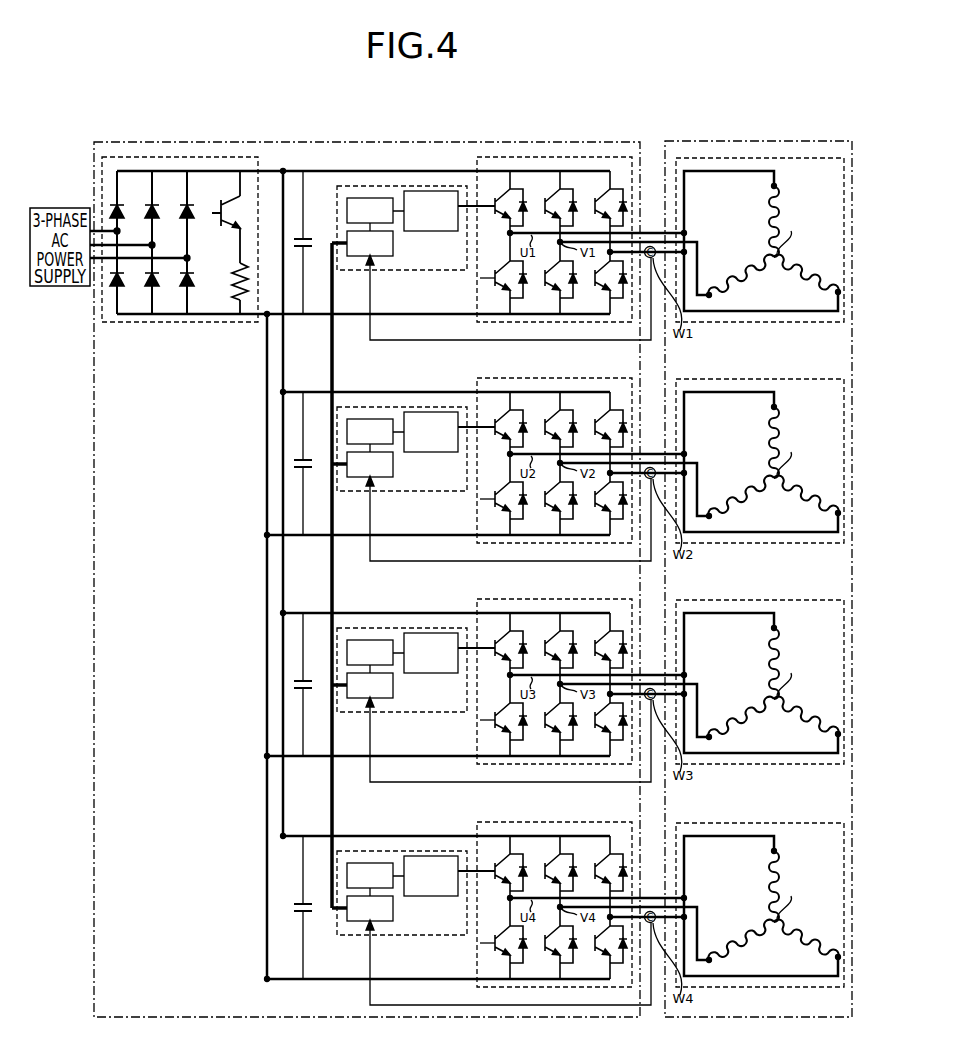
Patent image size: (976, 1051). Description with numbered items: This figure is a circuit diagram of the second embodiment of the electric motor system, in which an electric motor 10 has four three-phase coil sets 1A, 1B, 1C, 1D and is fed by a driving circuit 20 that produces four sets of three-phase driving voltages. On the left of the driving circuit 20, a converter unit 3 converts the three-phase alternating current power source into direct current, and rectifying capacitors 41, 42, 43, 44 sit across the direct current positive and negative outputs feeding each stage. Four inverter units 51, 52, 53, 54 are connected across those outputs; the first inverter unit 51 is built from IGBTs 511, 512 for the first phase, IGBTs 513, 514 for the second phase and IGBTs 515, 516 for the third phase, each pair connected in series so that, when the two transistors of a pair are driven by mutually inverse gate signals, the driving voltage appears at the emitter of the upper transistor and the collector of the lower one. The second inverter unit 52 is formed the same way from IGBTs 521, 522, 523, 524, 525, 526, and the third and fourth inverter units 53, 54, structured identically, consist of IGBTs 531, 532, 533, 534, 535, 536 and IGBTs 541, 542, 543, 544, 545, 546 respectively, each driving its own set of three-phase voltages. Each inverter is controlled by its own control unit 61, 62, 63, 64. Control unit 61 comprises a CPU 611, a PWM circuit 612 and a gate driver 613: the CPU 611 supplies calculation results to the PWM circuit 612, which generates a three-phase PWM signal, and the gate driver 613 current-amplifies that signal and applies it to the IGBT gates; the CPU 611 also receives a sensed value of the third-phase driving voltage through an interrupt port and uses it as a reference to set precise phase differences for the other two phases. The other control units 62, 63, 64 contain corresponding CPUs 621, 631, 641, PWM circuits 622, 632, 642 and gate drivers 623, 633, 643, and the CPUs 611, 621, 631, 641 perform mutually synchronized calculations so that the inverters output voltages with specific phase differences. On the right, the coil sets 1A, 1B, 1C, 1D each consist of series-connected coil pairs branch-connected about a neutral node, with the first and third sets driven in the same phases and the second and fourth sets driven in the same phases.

The driving circuit 20 is at (118, 142).
The converter unit 3 is at (186, 157).
The electric motor 10 is at (736, 141).
The first three-phase coil set 1A is at (812, 158).
The second three-phase coil set 1B is at (760, 442).
The third three-phase coil set 1C is at (760, 663).
The fourth three-phase coil set 1D is at (760, 886).
The rectifying capacitor 41 is at (302, 234).
The rectifying capacitor 42 is at (298, 452).
The smoothing capacitor 43 is at (298, 673).
The smoothing capacitor 44 is at (298, 907).
The first inverter unit 51 is at (532, 214).
The second inverter unit 52 is at (529, 449).
The third inverter unit 53 is at (529, 670).
The fourth inverter unit 54 is at (529, 893).
The IGBT 511 is at (497, 200).
The IGBT 512 is at (480, 278).
The IGBT 513 is at (547, 200).
The IGBT 514 is at (547, 287).
The IGBT 515 is at (597, 200).
The IGBT 516 is at (597, 287).
The IGBT 521 is at (508, 401).
The IGBT 522 is at (477, 503).
The IGBT 523 is at (558, 401).
The IGBT 524 is at (549, 509).
The IGBT 525 is at (608, 401).
The IGBT 526 is at (602, 509).
The IGBT 531 is at (508, 622).
The IGBT 532 is at (477, 724).
The IGBT 533 is at (558, 622).
The IGBT 534 is at (549, 730).
The IGBT 535 is at (608, 622).
The IGBT 536 is at (602, 730).
The IGBT 541 is at (508, 845).
The IGBT 542 is at (477, 947).
The IGBT 543 is at (558, 845).
The IGBT 544 is at (549, 953).
The IGBT 545 is at (608, 845).
The IGBT 546 is at (602, 953).
The control unit 61 is at (413, 209).
The control unit 62 is at (413, 430).
The control unit 63 is at (413, 651).
The control unit 64 is at (413, 874).
The CPU 611 is at (393, 243).
The CPU 621 is at (395, 466).
The CPU 631 is at (395, 687).
The CPU 641 is at (395, 910).
The PWM circuit 612 is at (385, 198).
The PWM generator 622 is at (370, 407).
The PWM generator 632 is at (370, 628).
The PWM generator 642 is at (370, 851).
The gate driver 613 is at (422, 191).
The gate driver 623 is at (430, 411).
The gate driver 633 is at (430, 632).
The gate driver 643 is at (430, 855).